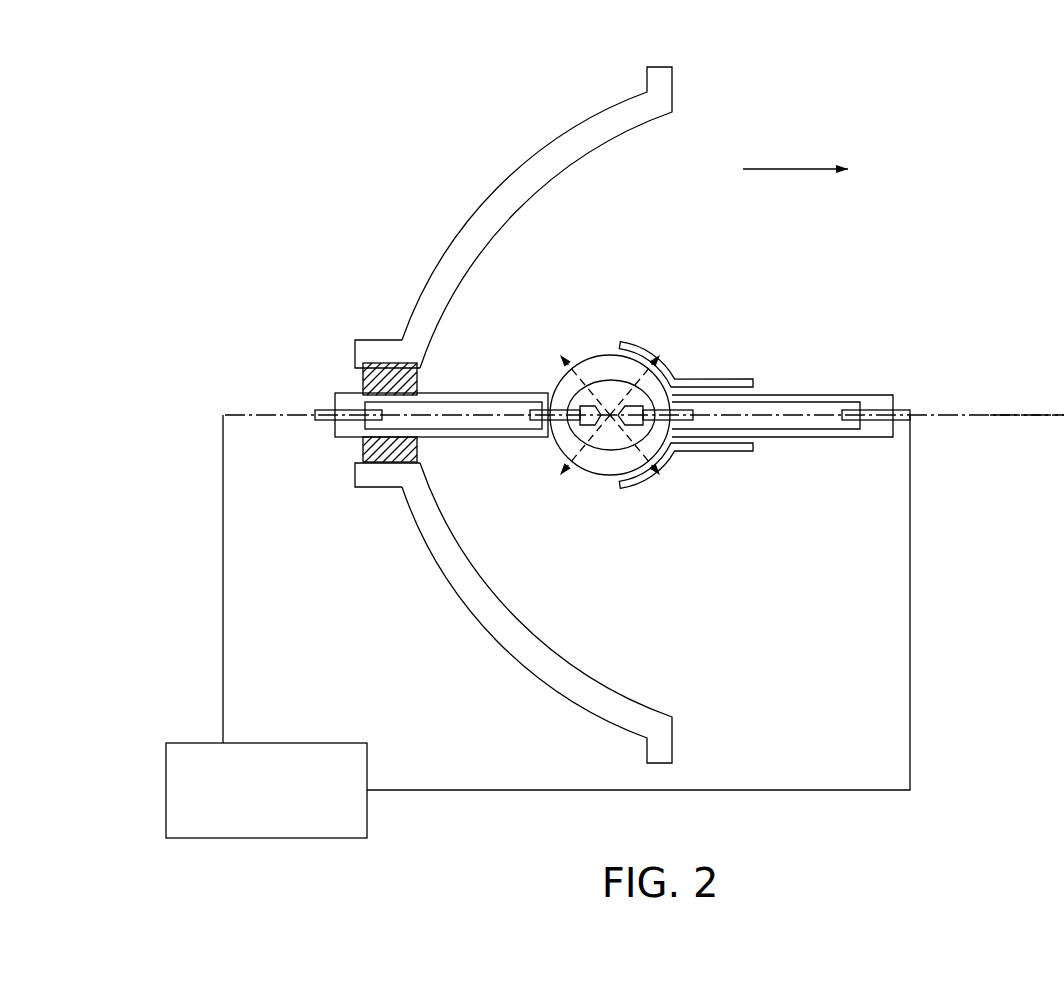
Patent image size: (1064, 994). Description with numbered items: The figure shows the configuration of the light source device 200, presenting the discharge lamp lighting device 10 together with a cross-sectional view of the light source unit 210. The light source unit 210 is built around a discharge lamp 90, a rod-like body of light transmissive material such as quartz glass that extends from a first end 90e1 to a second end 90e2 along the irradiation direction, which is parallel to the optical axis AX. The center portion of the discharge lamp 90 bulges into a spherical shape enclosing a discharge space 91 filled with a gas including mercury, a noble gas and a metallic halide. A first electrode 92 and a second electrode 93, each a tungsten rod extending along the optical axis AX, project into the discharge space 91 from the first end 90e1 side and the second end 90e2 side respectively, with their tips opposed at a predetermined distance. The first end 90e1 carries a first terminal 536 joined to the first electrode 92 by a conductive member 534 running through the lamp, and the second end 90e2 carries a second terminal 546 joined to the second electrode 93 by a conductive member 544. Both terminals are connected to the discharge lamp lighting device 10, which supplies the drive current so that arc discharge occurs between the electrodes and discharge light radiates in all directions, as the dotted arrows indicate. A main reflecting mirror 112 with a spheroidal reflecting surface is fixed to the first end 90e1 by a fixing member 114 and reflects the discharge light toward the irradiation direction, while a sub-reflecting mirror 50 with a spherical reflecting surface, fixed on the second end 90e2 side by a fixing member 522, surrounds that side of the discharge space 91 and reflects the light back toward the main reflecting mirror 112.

The light source device 200 is at (1032, 111).
The light source unit 210 is at (388, 150).
The main reflecting mirror 112 is at (512, 172).
The fixing member 114 is at (352, 363).
The discharge lamp lighting device 10 is at (285, 743).
The sub-reflecting mirror 50 is at (648, 343).
The fixing member 522 is at (753, 390).
The discharge lamp 90 is at (598, 355).
The discharge space 91 is at (609, 440).
The first electrode 92 is at (554, 440).
The second electrode 93 is at (668, 447).
The first end 90e1 is at (333, 393).
The second end 90e2 is at (877, 393).
The conductive member 534 is at (468, 422).
The first terminal 536 is at (321, 424).
The conductive member 544 is at (778, 430).
The second terminal 546 is at (898, 424).
The optical axis AX is at (1027, 410).